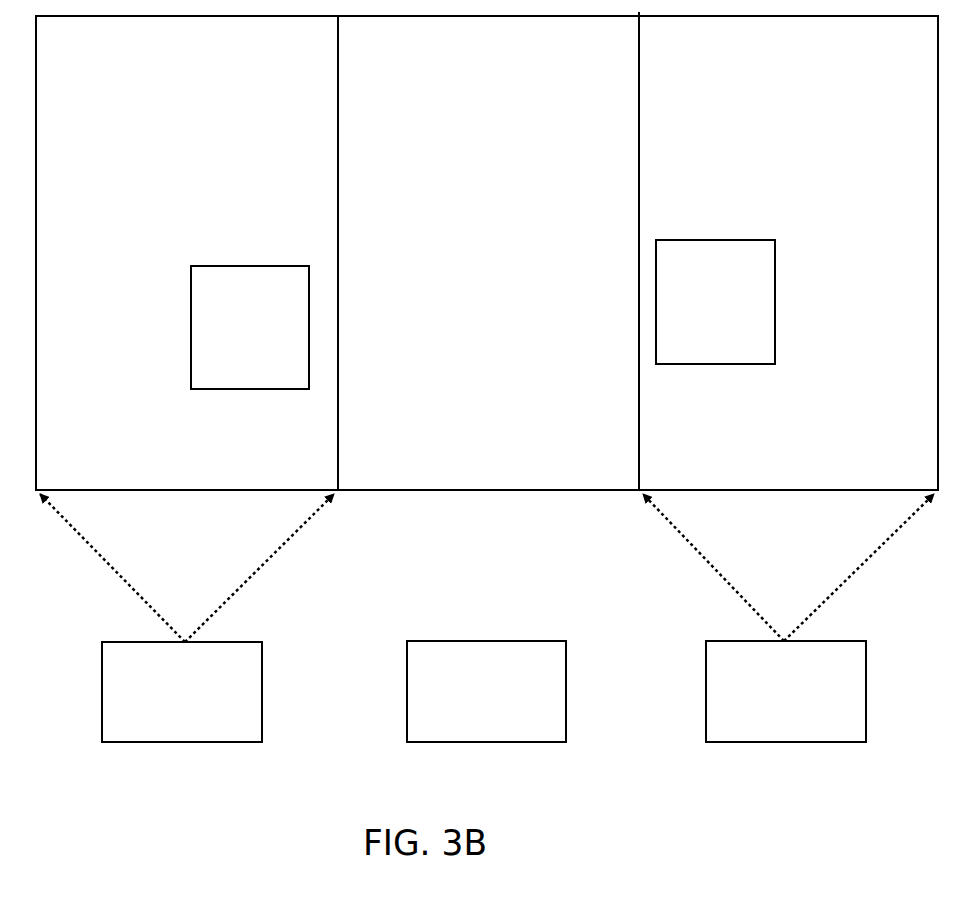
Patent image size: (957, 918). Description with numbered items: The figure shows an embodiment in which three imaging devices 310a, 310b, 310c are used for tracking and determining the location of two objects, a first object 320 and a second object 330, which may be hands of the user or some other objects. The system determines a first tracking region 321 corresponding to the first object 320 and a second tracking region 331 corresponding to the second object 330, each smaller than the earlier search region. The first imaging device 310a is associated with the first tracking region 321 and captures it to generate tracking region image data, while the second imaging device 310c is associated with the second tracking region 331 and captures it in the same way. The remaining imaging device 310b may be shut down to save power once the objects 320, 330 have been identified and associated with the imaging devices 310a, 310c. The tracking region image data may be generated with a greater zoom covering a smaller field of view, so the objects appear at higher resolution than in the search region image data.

The first tracking region 321 is at (168, 122).
The second tracking region 331 is at (759, 136).
The first object 320 is at (230, 354).
The second object 330 is at (695, 329).
The first imaging device 310a is at (153, 732).
The imaging device 310b is at (457, 732).
The second imaging device 310c is at (757, 732).